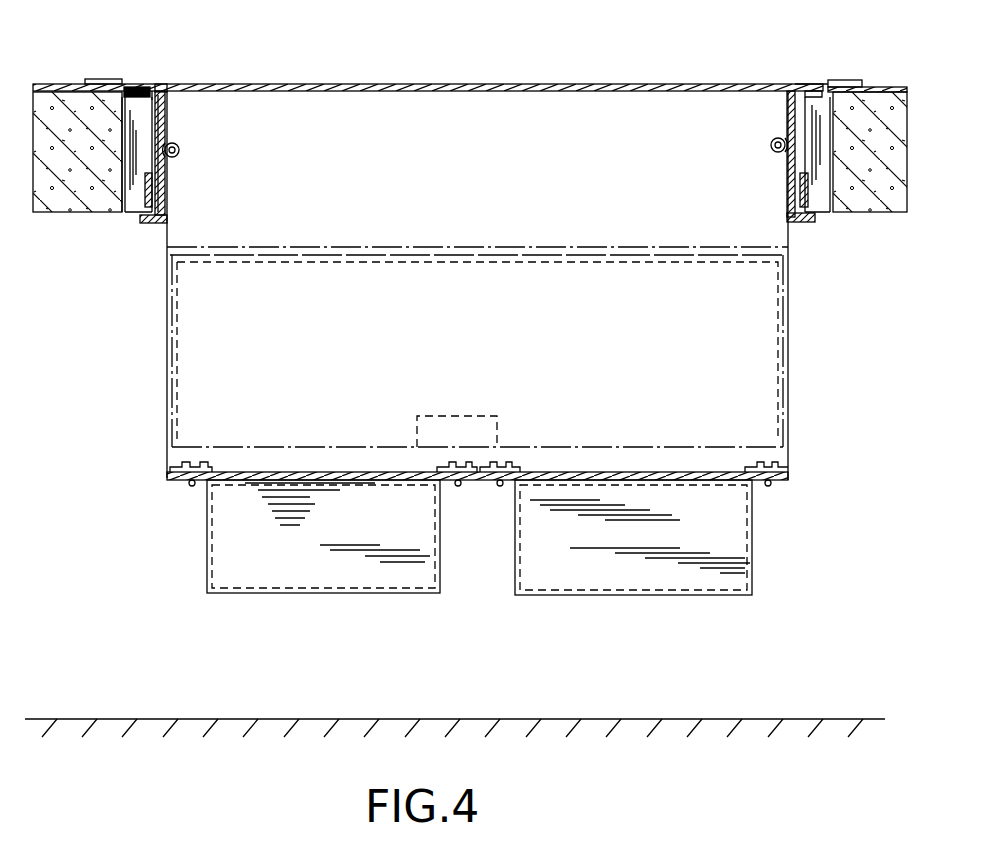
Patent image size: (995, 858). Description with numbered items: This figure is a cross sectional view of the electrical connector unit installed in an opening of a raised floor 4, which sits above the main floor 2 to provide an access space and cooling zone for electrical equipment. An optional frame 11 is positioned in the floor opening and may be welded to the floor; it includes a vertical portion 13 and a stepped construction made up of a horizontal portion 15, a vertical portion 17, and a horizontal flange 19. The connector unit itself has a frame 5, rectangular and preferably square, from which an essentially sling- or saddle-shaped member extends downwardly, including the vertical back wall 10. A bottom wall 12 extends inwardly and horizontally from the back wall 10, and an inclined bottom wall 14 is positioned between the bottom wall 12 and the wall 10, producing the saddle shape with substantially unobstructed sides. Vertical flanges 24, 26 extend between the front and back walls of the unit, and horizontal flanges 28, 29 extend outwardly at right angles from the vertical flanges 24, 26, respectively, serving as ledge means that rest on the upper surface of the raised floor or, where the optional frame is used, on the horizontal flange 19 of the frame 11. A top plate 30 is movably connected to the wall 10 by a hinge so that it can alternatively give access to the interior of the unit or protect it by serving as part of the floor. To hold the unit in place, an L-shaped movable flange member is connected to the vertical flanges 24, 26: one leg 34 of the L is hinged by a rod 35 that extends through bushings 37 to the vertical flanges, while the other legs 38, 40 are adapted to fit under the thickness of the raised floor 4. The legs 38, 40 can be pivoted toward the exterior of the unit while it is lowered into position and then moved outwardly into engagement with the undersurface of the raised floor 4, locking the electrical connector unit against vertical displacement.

The main floor 2 is at (540, 718).
The raised floor 4 is at (866, 205).
The frame 5 is at (160, 399).
The back wall 10 is at (500, 170).
The frame 11 is at (102, 236).
The bottom wall 12 is at (571, 480).
The vertical portion 13 is at (150, 140).
The inclined bottom wall 14 is at (498, 354).
The horizontal portion 15 is at (142, 91).
The vertical portion 17 is at (132, 87).
The horizontal flange 19 is at (110, 79).
The vertical flange 24 is at (165, 100).
The vertical flange 26 is at (785, 100).
The horizontal flange 28 is at (158, 84).
The horizontal flange 29 is at (802, 91).
The top plate 30 is at (511, 84).
The leg 34 is at (165, 190).
The rod 35 is at (182, 150).
The bushing 37 is at (180, 156).
The leg 38 is at (805, 222).
The leg 40 is at (150, 223).